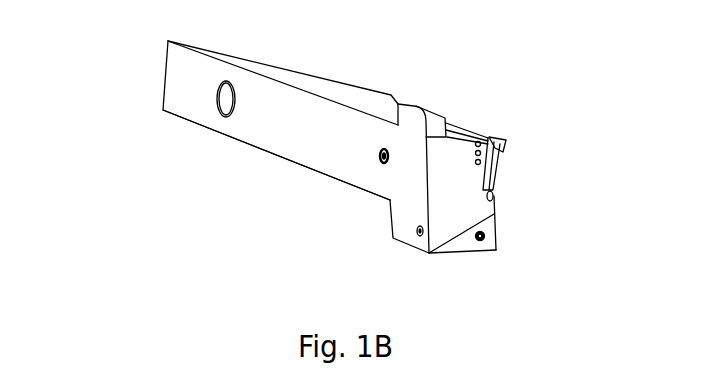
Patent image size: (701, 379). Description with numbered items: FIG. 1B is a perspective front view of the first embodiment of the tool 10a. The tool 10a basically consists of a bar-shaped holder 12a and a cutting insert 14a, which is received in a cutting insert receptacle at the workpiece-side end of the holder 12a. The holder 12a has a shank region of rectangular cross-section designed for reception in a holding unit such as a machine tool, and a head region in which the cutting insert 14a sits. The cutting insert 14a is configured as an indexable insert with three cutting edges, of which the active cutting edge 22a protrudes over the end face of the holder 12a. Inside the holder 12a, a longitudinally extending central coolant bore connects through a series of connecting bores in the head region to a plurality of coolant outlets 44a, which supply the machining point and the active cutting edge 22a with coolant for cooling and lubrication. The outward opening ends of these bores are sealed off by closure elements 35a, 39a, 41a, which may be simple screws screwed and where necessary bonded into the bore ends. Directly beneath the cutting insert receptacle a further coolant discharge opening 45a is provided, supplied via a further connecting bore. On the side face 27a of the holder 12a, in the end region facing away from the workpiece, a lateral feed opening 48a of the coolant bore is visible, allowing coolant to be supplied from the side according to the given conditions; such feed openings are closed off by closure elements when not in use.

The tool 10a is at (112, 45).
The holder 12a is at (153, 107).
The cutting insert 14a is at (483, 128).
The active cutting edge 22a is at (507, 140).
The side face 27a is at (290, 143).
The closure element 35a is at (384, 150).
The closure element 39a is at (486, 236).
The closure element 41a is at (418, 232).
The coolant outlets 44a is at (468, 154).
The further coolant discharge opening 45a is at (494, 196).
The lateral feed opening 48a is at (218, 101).